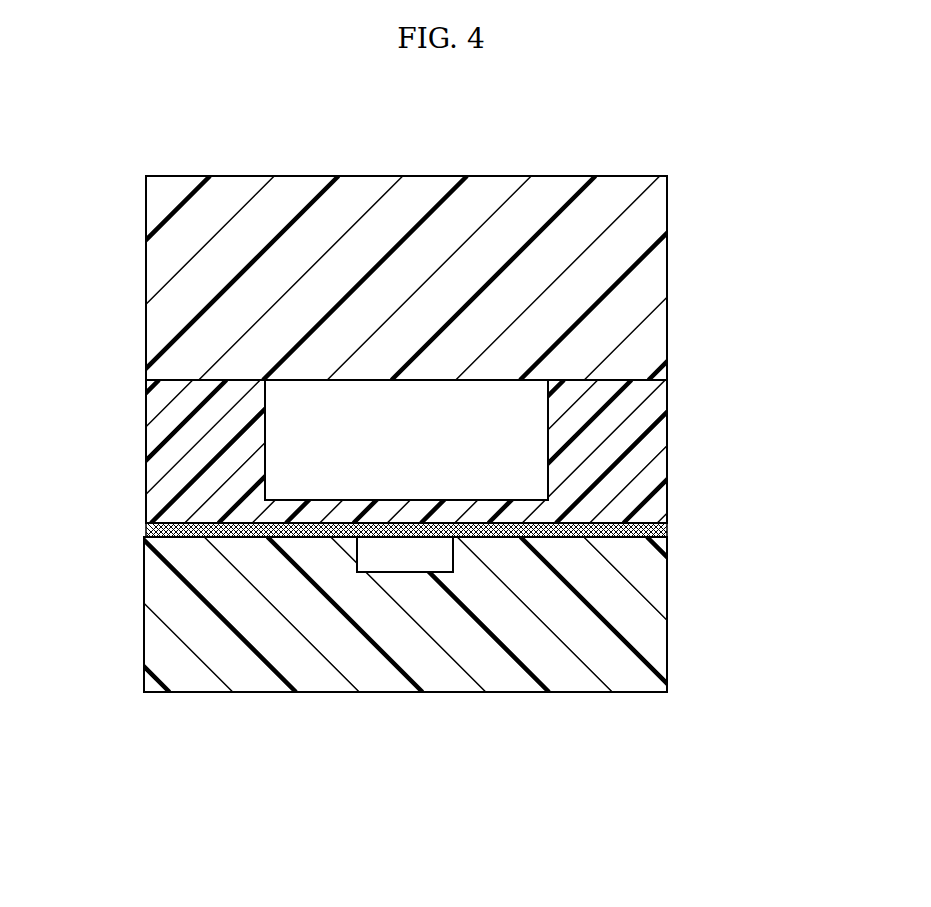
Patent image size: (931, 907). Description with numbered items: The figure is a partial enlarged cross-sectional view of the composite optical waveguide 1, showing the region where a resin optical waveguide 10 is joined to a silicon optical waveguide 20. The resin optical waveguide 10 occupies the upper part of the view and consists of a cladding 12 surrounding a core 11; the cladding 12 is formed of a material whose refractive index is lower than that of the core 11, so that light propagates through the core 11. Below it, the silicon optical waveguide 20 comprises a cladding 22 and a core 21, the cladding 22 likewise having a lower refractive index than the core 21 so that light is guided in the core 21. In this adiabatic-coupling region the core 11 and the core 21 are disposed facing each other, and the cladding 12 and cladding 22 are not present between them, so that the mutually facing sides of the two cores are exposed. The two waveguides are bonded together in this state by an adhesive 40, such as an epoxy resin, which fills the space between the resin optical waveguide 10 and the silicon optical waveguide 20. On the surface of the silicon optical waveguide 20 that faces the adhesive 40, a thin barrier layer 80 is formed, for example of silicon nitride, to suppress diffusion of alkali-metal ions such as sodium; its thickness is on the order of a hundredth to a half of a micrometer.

The composite optical waveguide 1 is at (616, 144).
The resin optical waveguide 10 is at (765, 279).
The core 11 is at (527, 440).
The cladding 12 is at (645, 296).
The silicon optical waveguide 20 is at (501, 767).
The core 21 is at (403, 563).
The cladding 22 is at (475, 657).
The adhesive 40 is at (163, 462).
The barrier layer 80 is at (152, 528).